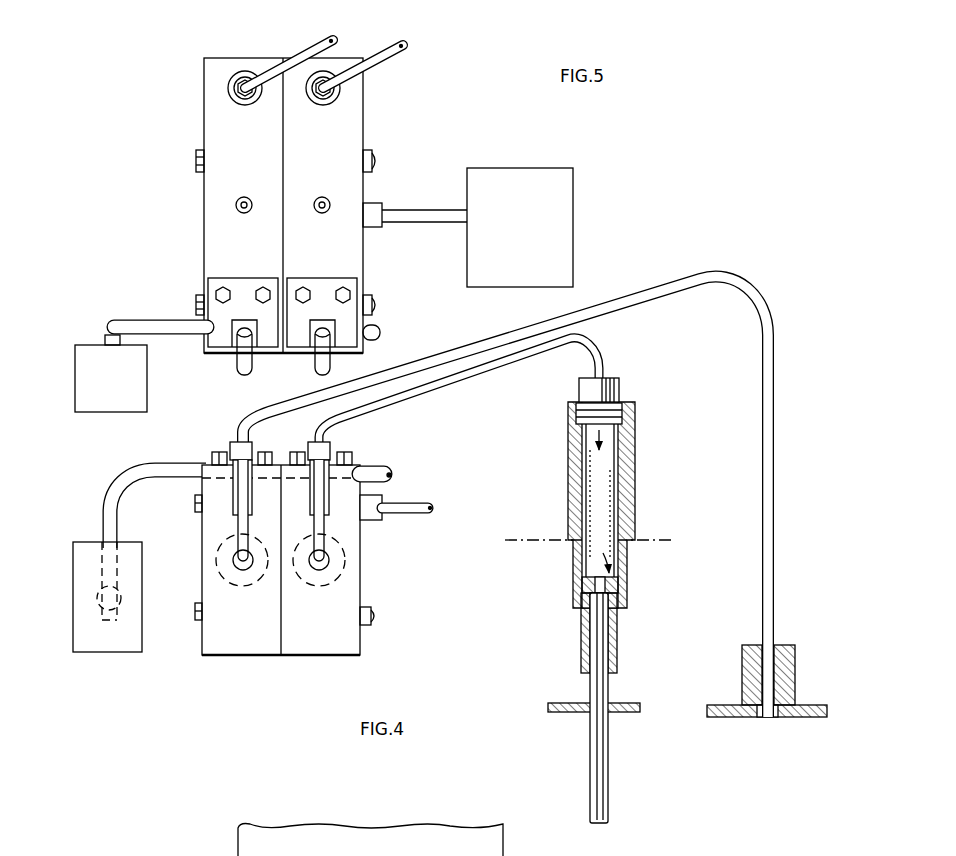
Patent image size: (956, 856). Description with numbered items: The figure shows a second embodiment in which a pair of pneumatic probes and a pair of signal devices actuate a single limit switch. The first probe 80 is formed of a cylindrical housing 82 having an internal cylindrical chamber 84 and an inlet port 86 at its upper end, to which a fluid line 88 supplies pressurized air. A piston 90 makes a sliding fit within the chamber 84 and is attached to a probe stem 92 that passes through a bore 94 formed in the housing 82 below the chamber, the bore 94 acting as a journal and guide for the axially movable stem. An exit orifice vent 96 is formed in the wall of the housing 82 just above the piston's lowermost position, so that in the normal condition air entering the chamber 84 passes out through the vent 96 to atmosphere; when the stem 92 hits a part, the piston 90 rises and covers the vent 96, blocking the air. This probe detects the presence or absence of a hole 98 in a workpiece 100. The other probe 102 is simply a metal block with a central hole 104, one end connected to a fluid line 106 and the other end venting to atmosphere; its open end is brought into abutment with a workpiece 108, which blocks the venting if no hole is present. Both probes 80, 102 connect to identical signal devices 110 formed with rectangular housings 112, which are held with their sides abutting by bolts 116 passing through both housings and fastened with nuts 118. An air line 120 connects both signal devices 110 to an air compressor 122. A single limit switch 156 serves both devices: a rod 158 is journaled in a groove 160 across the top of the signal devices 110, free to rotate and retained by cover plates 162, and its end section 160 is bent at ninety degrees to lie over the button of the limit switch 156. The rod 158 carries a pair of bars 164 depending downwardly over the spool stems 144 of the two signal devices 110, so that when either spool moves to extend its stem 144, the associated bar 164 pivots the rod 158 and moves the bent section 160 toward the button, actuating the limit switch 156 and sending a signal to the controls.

In FIG. 4, the probe 80 is at (637, 458).
In FIG. 4, the cylindrical housing 82 is at (568, 465).
In FIG. 4, the internal cylindrical chamber 84 is at (618, 506).
In FIG. 4, the inlet port 86 is at (622, 406).
In FIG. 5, the fluid line 88 is at (372, 62).
In FIG. 4, the fluid line 88 is at (600, 360).
In FIG. 4, the piston 90 is at (574, 590).
In FIG. 4, the probe stem 92 is at (608, 690).
In FIG. 4, the bore 94 is at (617, 630).
In FIG. 4, the exit orifice vent 96 is at (622, 577).
In FIG. 4, the hole 98 is at (610, 713).
In FIG. 4, the workpiece 100 is at (638, 706).
In FIG. 4, the probe 102 is at (796, 680).
In FIG. 4, the central hole 104 is at (751, 680).
In FIG. 5, the fluid line 106 is at (312, 44).
In FIG. 4, the fluid line 106 is at (774, 630).
In FIG. 4, the workpiece 108 is at (775, 718).
In FIG. 5, the signal device 110 is at (380, 172).
In FIG. 4, the signal device 110 is at (208, 655).
In FIG. 5, the rectangular housing 112 is at (219, 68).
In FIG. 4, the rectangular housing 112 is at (247, 645).
In FIG. 5, the bolt 116 is at (196, 154).
In FIG. 4, the bolt 116 is at (195, 504).
In FIG. 5, the nut 118 is at (373, 155).
In FIG. 4, the nut 118 is at (366, 612).
In FIG. 5, the air line 120 is at (420, 228).
In FIG. 4, the air line 120 is at (400, 522).
In FIG. 5, the air compressor 122 is at (490, 278).
In FIG. 4, the spool stem 144 is at (236, 573).
In FIG. 5, the limit switch 156 is at (88, 390).
In FIG. 4, the limit switch 156 is at (130, 560).
In FIG. 5, the rod 158 is at (175, 338).
In FIG. 4, the rod 158 is at (211, 470).
In FIG. 4, the groove 160 is at (103, 518).
In FIG. 5, the cover plate 162 is at (240, 290).
In FIG. 4, the cover plate 162 is at (96, 605).
In FIG. 5, the bar 164 is at (315, 364).
In FIG. 4, the bar 164 is at (245, 520).